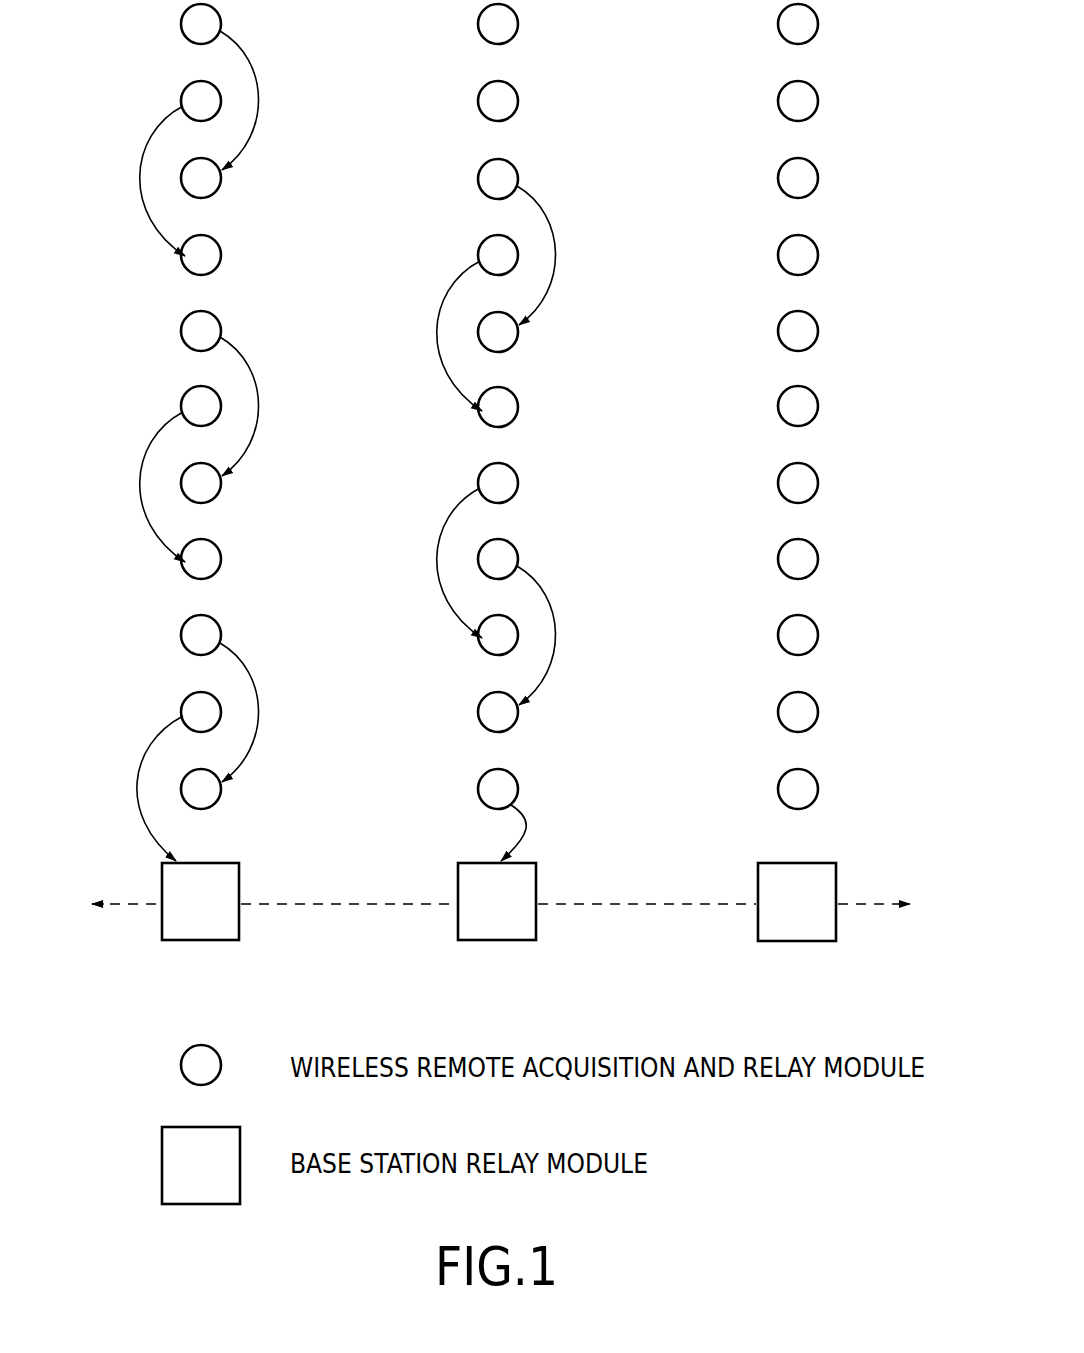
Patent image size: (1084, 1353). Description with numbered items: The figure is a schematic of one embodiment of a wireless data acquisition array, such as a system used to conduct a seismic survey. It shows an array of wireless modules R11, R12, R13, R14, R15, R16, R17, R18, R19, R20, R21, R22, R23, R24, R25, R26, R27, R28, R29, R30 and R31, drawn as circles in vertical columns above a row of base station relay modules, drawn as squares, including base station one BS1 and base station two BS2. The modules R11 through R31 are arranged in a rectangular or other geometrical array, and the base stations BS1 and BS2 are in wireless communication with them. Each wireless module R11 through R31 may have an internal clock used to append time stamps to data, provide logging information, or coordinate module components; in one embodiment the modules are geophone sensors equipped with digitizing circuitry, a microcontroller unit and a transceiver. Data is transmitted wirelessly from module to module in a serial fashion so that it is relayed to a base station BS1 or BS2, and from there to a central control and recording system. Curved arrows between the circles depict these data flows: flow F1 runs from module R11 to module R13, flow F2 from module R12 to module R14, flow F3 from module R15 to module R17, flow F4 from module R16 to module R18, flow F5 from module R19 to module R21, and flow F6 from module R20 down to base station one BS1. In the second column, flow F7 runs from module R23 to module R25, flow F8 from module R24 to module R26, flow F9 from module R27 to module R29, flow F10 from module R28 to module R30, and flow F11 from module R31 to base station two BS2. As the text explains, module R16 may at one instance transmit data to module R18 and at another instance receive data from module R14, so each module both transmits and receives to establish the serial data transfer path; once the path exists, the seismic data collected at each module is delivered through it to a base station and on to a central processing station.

The wireless module R11 is at (231, 23).
The wireless module R12 is at (174, 101).
The wireless module R13 is at (231, 180).
The wireless module R14 is at (231, 255).
The wireless module R15 is at (174, 331).
The wireless module R16 is at (174, 404).
The wireless module R17 is at (230, 483).
The wireless module R18 is at (231, 559).
The wireless module R19 is at (174, 635).
The wireless module R20 is at (174, 712).
The wireless module R21 is at (349, 405).
The wireless module R22 is at (469, 101).
The wireless module R23 is at (468, 180).
The wireless module R24 is at (468, 255).
The wireless module R25 is at (530, 332).
The wireless module R26 is at (530, 407).
The wireless module R27 is at (530, 483).
The wireless module R28 is at (530, 559).
The wireless module R29 is at (465, 637).
The wireless module R30 is at (530, 712).
The wireless module R31 is at (465, 789).
The data flow F1 is at (264, 100).
The data flow F2 is at (139, 181).
The data flow F3 is at (265, 406).
The data flow F4 is at (139, 487).
The data flow F5 is at (265, 712).
The data flow F6 is at (143, 788).
The data flow F7 is at (560, 255).
The data flow F8 is at (439, 336).
The data flow F9 is at (437, 563).
The data flow F10 is at (562, 635).
The data flow F11 is at (554, 832).
The base station one BS1 is at (233, 900).
The base station two BS2 is at (534, 900).